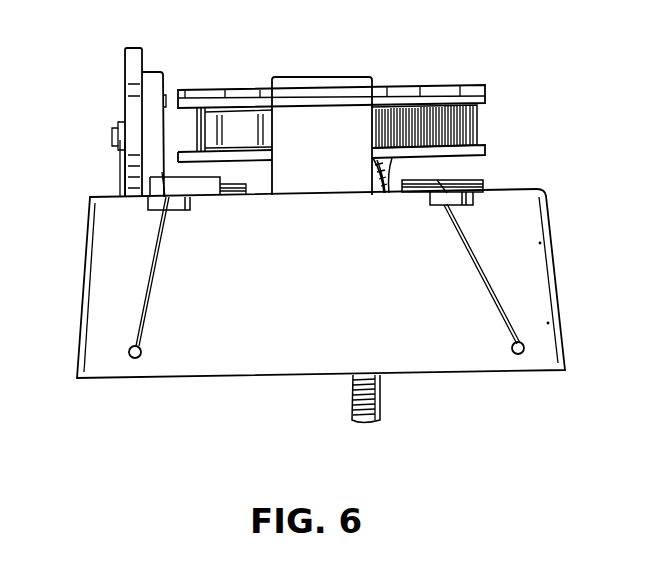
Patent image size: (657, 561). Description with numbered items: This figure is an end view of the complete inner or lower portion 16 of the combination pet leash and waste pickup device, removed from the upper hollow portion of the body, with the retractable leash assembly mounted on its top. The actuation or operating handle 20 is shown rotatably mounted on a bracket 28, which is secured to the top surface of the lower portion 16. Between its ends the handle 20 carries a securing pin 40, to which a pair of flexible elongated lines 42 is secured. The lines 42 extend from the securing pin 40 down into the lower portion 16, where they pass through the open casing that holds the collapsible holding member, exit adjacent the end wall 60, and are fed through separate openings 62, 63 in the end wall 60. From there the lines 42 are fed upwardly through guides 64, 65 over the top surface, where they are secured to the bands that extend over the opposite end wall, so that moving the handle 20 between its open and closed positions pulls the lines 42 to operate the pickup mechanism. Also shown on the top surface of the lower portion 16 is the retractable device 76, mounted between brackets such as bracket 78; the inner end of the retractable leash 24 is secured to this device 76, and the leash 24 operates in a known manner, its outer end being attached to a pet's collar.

The lower portion 16 is at (578, 303).
The actuation handle 20 is at (128, 68).
The retractable leash 24 is at (478, 126).
The bracket 28 is at (155, 76).
The securing pin 40 is at (112, 137).
The pair of lines 42 is at (120, 172).
The end wall 60 is at (347, 284).
The opening 62 is at (514, 354).
The opening 63 is at (139, 358).
The guide 64 is at (432, 200).
The guide 65 is at (190, 203).
The retractable device 76 is at (445, 85).
The bracket 78 is at (320, 88).